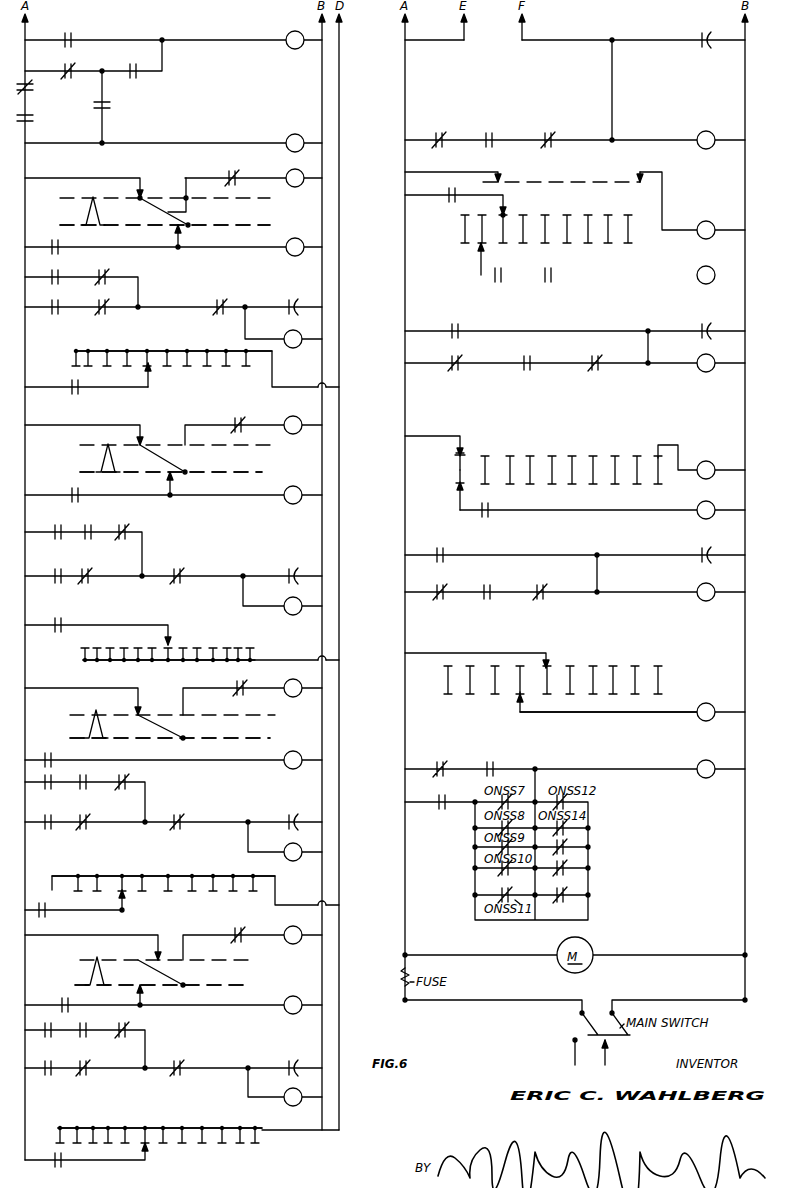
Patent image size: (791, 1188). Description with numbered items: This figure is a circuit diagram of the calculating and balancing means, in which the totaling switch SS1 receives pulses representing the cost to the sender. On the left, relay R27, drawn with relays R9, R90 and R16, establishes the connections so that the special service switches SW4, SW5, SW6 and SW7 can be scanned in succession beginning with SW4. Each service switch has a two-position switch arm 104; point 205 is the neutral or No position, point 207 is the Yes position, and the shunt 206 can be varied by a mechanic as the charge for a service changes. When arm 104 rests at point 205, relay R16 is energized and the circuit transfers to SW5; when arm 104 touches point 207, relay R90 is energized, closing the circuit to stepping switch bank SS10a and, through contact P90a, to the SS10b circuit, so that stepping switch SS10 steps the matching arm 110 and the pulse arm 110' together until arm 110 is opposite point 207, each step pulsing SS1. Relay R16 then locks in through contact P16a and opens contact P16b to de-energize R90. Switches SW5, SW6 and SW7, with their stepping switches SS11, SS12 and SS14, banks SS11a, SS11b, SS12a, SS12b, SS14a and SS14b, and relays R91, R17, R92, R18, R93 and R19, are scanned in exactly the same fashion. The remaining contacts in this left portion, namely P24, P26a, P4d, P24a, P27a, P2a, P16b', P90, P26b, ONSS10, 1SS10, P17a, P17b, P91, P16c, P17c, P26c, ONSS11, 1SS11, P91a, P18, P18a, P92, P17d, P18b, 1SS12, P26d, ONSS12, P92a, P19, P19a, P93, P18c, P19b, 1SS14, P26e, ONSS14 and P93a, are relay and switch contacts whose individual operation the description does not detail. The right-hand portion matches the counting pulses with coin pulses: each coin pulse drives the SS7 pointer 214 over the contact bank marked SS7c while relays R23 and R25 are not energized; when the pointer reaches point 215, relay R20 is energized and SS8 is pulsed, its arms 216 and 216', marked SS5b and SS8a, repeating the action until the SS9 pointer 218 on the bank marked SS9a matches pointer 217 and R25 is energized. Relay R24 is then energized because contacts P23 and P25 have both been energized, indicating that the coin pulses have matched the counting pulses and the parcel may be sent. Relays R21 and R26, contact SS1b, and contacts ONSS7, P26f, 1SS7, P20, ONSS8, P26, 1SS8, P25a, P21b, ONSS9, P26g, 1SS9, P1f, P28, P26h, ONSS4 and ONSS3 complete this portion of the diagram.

The switch arm 104 is at (82, 178).
The neutral point 205 is at (138, 197).
The shunt 206 is at (160, 212).
The yes point 207 is at (168, 198).
The matching arm 110 is at (193, 236).
The pulse arm 110' is at (165, 375).
The SS7 pointer 214 is at (485, 255).
The end point 215 is at (664, 236).
The SS8 arm 216 is at (439, 490).
The SS8 arm 216' is at (435, 443).
The SS6 pointer 217 is at (430, 654).
The SS9 pointer 218 is at (582, 713).
The special service switch SW4 is at (82, 220).
The special service switch SW5 is at (120, 446).
The special service switch SW6 is at (120, 714).
The special service switch SW7 is at (115, 960).
The relay contact P24 is at (70, 32).
The relay contact P26a is at (71, 66).
The relay contact P4d is at (137, 80).
The relay contact P24a is at (36, 87).
The relay contact P27a is at (36, 119).
The relay contact P2a is at (118, 106).
The relay R9 is at (290, 46).
The relay R27 is at (295, 134).
The relay R90 is at (291, 170).
The relay R16 is at (296, 256).
The relay R91 is at (295, 416).
The relay R17 is at (293, 504).
The relay R92 is at (293, 697).
The relay R18 is at (293, 769).
The relay R93 is at (297, 924).
The relay R19 is at (293, 1014).
The relay R20 is at (706, 221).
The relay R24 is at (714, 268).
The relay R21 is at (706, 461).
The relay R23 is at (712, 494).
The relay R25 is at (716, 698).
The relay R26 is at (710, 757).
The stepping switch SS10 is at (293, 348).
The stepping switch SS11 coil SS11 is at (286, 612).
The stepping switch SS12 coil SS12 is at (296, 861).
The stepping switch SS14 coil SS14 is at (296, 1106).
The stepping switch SS7 is at (706, 130).
The stepping switch SS8 is at (706, 372).
The stepping switch SS9 is at (701, 585).
The stepping switch circuit SS10a is at (185, 225).
The stepping switch circuit SS10b is at (152, 356).
The stepping switch bank SS11a is at (194, 471).
The stepping switch bank SS11b is at (192, 652).
The stepping switch bank SS12a is at (187, 737).
The stepping switch bank SS12b is at (163, 875).
The stepping switch bank SS14a is at (183, 982).
The stepping switch bank SS14b is at (159, 1148).
The stepping switch bank SS7c is at (521, 232).
The totaling switch SS1 is at (513, 214).
The contact SS1b is at (448, 200).
The stepping switch wiper SS5b is at (437, 458).
The stepping switch wiper SS8a is at (437, 481).
The stepping switch bank SS9a is at (510, 701).
The relay contact P16a is at (58, 241).
The relay contact P16b is at (120, 268).
The relay contact P16b' is at (229, 168).
The relay contact P90 is at (57, 266).
The relay contact P26b is at (55, 314).
The off-normal contact ONSS10 is at (116, 316).
The contact 1SS10 is at (221, 300).
The relay contact P90a is at (77, 394).
The relay contact P17a is at (239, 419).
The relay contact P17b is at (74, 489).
The relay contact P91 is at (57, 524).
The relay contact P16c is at (88, 525).
The relay contact P17c is at (125, 525).
The relay contact P26c is at (58, 569).
The off-normal contact ONSS11 is at (86, 569).
The contact 1SS11 is at (177, 569).
The relay contact P91a is at (59, 618).
The relay contact P18 is at (238, 683).
The relay contact P18a is at (48, 752).
The relay contact P92 is at (48, 790).
The relay contact P17d is at (84, 790).
The relay contact P18b is at (119, 778).
The contact 1SS12 is at (178, 815).
The relay contact P26d is at (49, 830).
The off-normal contact ONSS12 is at (85, 830).
The relay contact P92a is at (44, 915).
The relay contact P19 is at (238, 930).
The relay contact P19a is at (67, 997).
The relay contact P93 is at (52, 1024).
The relay contact P18c is at (86, 1026).
The relay contact P19b is at (124, 1038).
The contact 1SS14 is at (179, 1060).
The relay contact P26e is at (49, 1076).
The off-normal contact ONSS14 is at (85, 1076).
The relay contact P93a is at (59, 1168).
The off-normal contact ONSS7 is at (440, 130).
The relay contact P26f is at (490, 148).
The contact 1SS7 is at (547, 130).
The relay contact P23 is at (500, 282).
The relay contact P25 is at (550, 282).
The relay contact P20 is at (456, 324).
The off-normal contact ONSS8 is at (457, 370).
The relay contact P26 is at (527, 356).
The contact 1SS8 is at (596, 370).
The relay contact P25a is at (490, 508).
The relay contact P21b is at (440, 563).
The off-normal contact ONSS9 is at (441, 600).
The relay contact P26g is at (488, 586).
The contact 1SS9 is at (542, 582).
The relay contact P1f is at (440, 762).
The relay contact P28 is at (490, 762).
The relay contact P26h is at (438, 814).
The off-normal contact ONSS4 is at (568, 846).
The off-normal contact ONSS3 is at (575, 872).